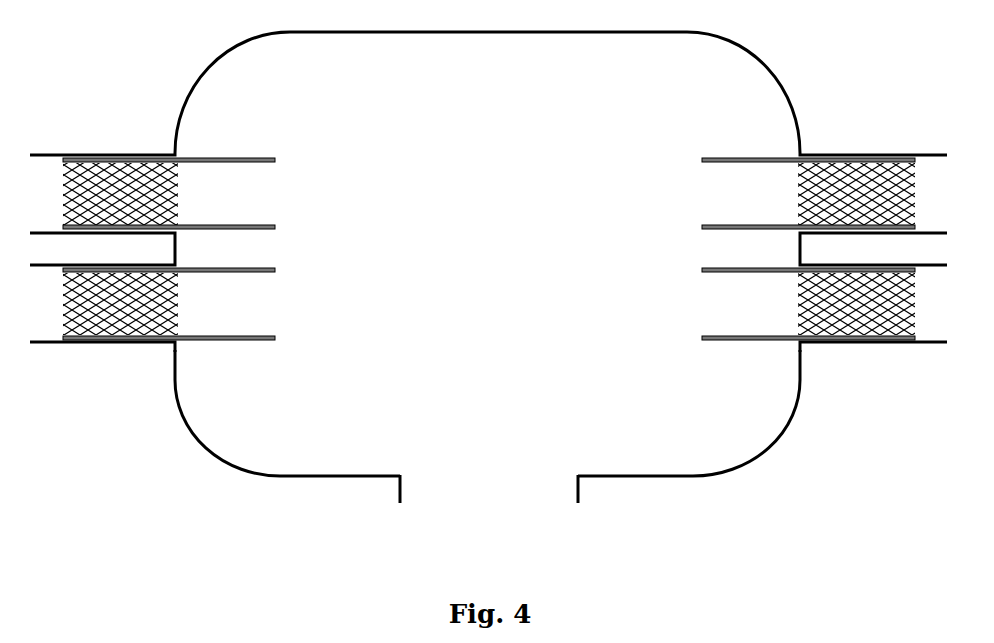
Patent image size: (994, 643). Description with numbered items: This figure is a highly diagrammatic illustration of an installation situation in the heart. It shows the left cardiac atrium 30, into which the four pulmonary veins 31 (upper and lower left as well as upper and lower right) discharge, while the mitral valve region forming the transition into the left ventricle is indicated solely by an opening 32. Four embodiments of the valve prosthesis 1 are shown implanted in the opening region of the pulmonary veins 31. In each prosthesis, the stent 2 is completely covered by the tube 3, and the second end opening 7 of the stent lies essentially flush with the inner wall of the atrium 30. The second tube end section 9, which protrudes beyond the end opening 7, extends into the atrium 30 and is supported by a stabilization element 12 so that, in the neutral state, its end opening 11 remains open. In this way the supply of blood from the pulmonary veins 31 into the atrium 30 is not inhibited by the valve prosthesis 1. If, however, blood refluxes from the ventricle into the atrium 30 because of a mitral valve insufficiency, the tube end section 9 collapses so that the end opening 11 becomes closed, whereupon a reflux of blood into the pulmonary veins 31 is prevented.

The valve prosthesis 1 is at (100, 137).
The stent 2 is at (130, 192).
The tube 3 is at (207, 160).
The second end opening 7 is at (176, 192).
The second tube end section 9 is at (233, 232).
The end opening 11 is at (266, 188).
The stabilization element 12 is at (252, 223).
The left cardiac atrium 30 is at (312, 445).
The pulmonary vein 31 is at (32, 332).
The opening 32 is at (403, 507).